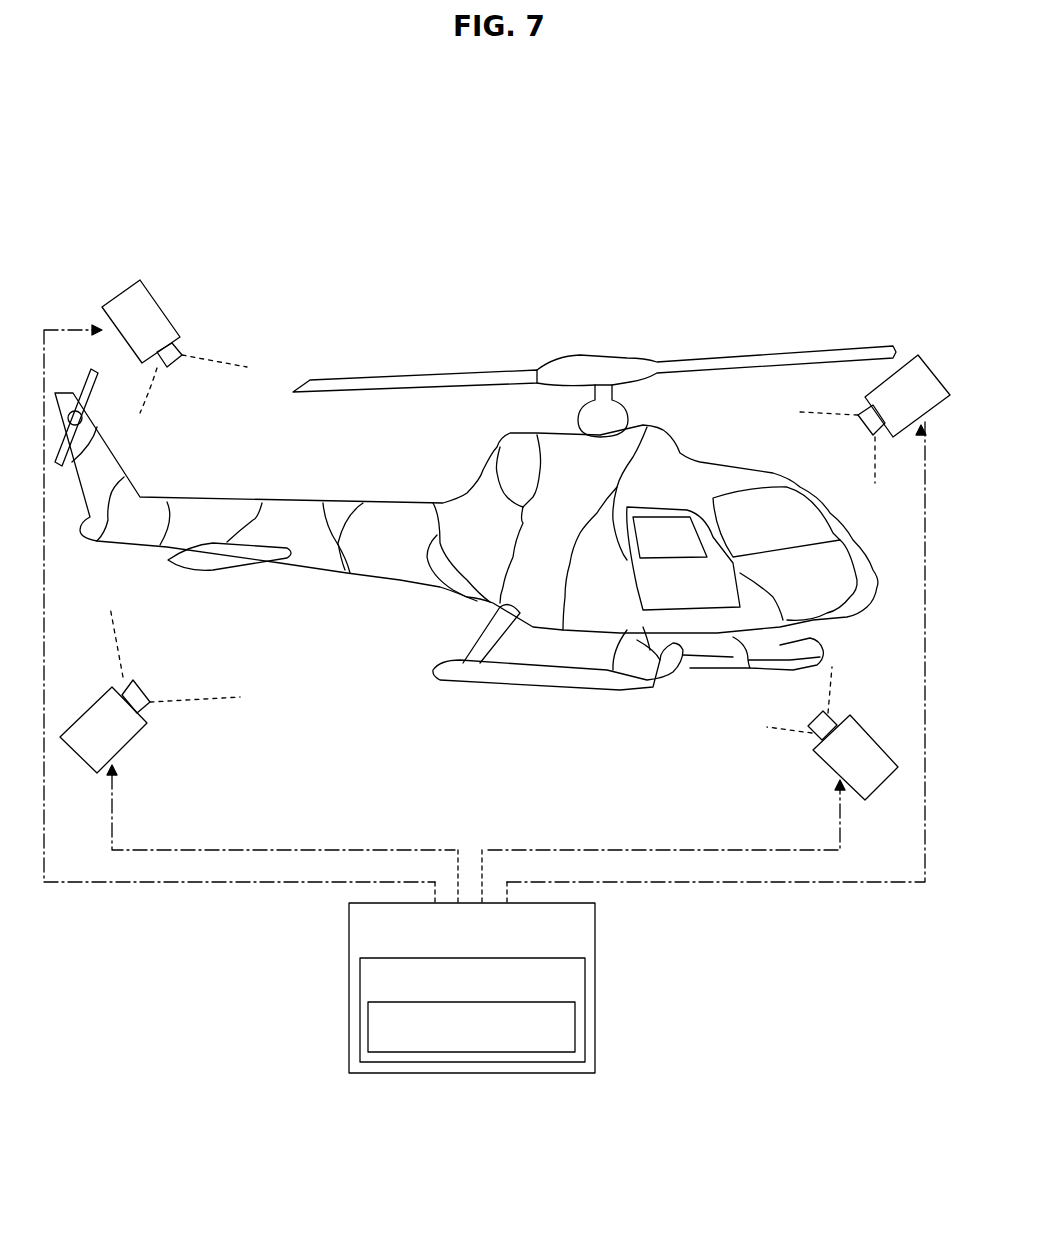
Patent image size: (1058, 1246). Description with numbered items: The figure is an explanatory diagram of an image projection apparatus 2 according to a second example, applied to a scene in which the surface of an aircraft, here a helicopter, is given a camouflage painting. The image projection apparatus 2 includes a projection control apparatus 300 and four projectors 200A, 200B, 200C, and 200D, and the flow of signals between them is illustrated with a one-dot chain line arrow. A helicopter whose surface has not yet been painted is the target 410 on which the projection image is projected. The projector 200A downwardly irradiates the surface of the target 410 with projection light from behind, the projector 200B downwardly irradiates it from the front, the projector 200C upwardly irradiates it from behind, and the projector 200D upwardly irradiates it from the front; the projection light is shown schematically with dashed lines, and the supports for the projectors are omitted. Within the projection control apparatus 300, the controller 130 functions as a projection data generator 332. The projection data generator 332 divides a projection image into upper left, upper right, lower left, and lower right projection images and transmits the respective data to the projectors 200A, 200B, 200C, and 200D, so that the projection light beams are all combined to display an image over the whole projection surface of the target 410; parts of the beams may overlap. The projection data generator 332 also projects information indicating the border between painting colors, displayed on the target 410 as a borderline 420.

The image projection apparatus 2 is at (318, 1011).
The projector 200A is at (165, 304).
The projector 200B is at (930, 360).
The projector 200C is at (130, 738).
The projector 200D is at (886, 786).
The target 410 is at (303, 497).
The borderline 420 is at (235, 494).
The projection control apparatus 300 is at (595, 935).
The controller 130 is at (585, 982).
The projection data generator 332 is at (575, 1025).